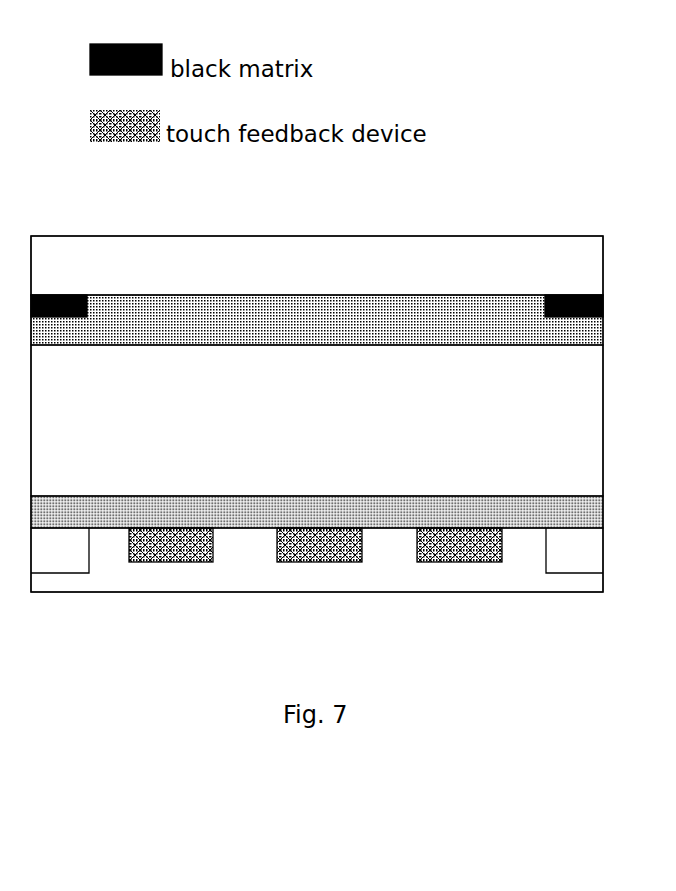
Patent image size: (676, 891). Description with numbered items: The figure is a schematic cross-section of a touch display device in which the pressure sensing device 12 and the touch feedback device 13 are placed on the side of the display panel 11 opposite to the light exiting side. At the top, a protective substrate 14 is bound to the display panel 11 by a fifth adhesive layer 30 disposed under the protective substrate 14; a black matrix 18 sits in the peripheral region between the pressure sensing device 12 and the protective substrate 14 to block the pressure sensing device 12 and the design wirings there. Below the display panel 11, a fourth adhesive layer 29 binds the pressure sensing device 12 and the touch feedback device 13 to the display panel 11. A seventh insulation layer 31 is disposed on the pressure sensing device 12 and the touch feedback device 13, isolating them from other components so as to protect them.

The display panel 11 is at (375, 458).
The pressure sensing device 12 is at (52, 539).
The touch feedback device 13 is at (323, 556).
The protective substrate 14 is at (198, 268).
The black matrix 18 is at (56, 294).
The fourth adhesive layer 29 is at (512, 512).
The fifth adhesive layer 30 is at (318, 323).
The seventh insulation layer 31 is at (242, 563).